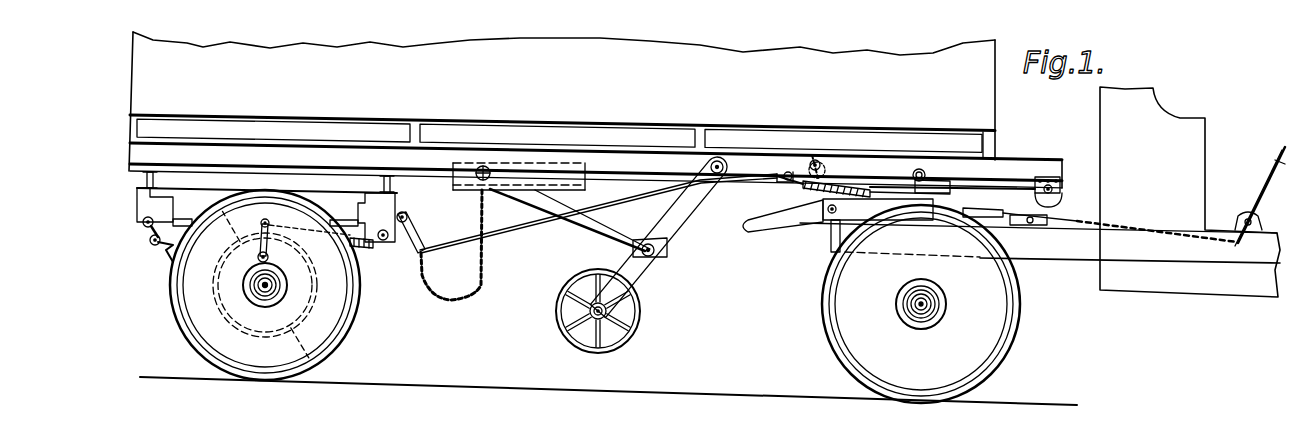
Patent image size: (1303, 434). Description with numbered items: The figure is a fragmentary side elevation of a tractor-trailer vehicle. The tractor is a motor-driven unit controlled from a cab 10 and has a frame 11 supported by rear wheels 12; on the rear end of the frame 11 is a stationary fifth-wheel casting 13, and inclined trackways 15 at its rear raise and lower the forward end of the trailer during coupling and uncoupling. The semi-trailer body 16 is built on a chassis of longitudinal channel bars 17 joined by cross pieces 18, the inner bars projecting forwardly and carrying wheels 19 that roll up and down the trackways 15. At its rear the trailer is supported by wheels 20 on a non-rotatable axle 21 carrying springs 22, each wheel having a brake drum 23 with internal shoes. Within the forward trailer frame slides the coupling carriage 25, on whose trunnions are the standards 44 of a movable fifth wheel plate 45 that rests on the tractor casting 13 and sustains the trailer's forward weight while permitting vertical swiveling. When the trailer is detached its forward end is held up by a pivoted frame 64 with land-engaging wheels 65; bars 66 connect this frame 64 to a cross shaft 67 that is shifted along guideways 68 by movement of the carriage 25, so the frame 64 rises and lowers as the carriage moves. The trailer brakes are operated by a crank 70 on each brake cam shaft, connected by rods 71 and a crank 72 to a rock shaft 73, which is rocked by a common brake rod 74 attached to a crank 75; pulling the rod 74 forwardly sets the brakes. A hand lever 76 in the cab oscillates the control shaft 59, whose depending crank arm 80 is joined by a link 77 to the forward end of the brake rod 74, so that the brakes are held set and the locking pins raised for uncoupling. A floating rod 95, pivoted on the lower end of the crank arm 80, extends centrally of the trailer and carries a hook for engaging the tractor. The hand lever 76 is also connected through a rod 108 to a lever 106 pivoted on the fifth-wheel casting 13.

The cab 10 is at (1116, 158).
The frame 11 is at (1070, 253).
The rear wheels 12 is at (980, 348).
The casting 13 is at (853, 213).
The inclined trackways 15 is at (773, 223).
The body 16 is at (420, 96).
The channel bars 17 is at (627, 173).
The cross pieces 18 is at (788, 190).
The wheels 19 is at (1062, 198).
The wheels 20 is at (300, 333).
The non-rotatable axle 21 is at (283, 297).
The springs 22 is at (154, 252).
The brake drum 23 is at (322, 358).
The coupling carriage 25 is at (937, 190).
The standards 44 is at (952, 178).
The movable fifth wheel plate 45 is at (960, 208).
The rock shaft 59 is at (819, 166).
The frame 64 is at (663, 240).
The land-engaging wheels 65 is at (635, 338).
The bars 66 is at (553, 208).
The cross shaft 67 is at (487, 166).
The guideways 68 is at (557, 182).
The crank 70 is at (213, 206).
The rods 71 is at (347, 222).
The crank 72 is at (392, 243).
The rock shaft 73 is at (406, 216).
The brake rod 74 is at (507, 240).
The crank 75 is at (416, 233).
The hand lever 76 is at (1263, 188).
The link 77 is at (794, 193).
The crank arm 80 is at (819, 171).
The floating rod 95 is at (847, 190).
The lever 106 is at (1030, 227).
The rod 108 is at (1078, 222).